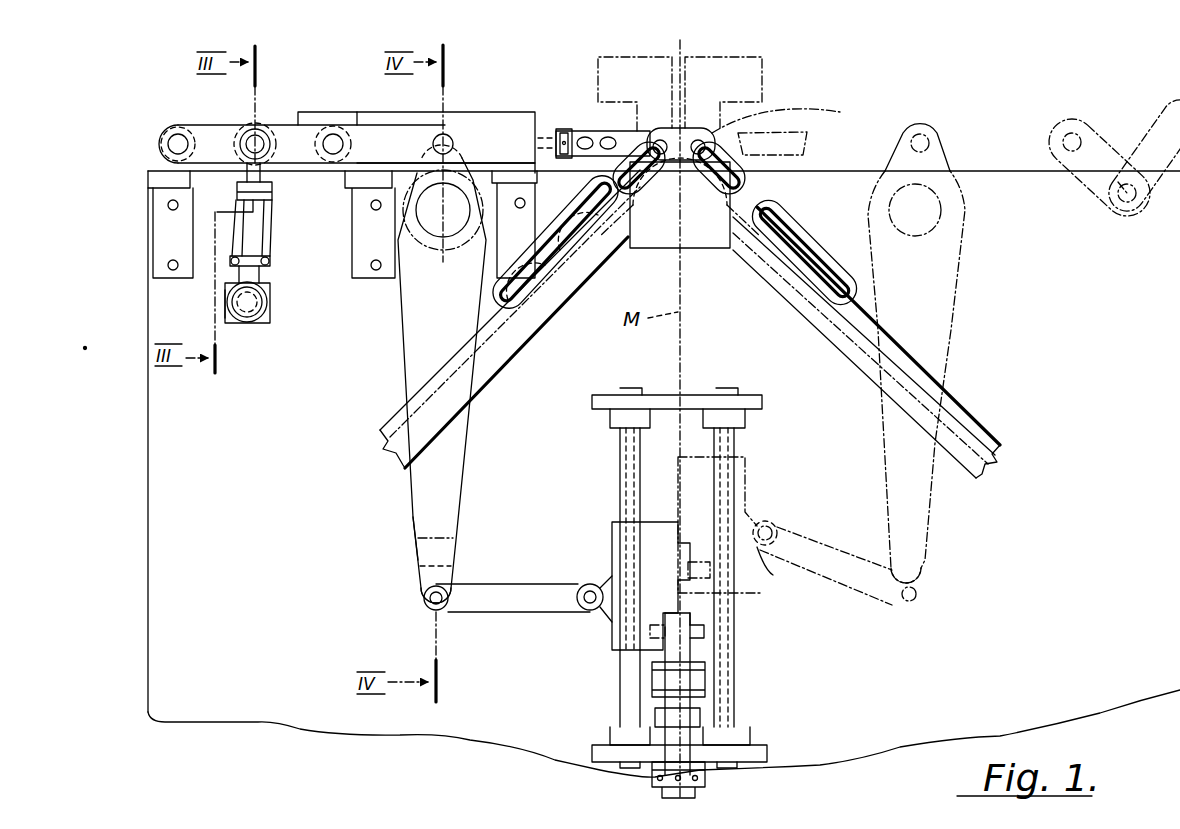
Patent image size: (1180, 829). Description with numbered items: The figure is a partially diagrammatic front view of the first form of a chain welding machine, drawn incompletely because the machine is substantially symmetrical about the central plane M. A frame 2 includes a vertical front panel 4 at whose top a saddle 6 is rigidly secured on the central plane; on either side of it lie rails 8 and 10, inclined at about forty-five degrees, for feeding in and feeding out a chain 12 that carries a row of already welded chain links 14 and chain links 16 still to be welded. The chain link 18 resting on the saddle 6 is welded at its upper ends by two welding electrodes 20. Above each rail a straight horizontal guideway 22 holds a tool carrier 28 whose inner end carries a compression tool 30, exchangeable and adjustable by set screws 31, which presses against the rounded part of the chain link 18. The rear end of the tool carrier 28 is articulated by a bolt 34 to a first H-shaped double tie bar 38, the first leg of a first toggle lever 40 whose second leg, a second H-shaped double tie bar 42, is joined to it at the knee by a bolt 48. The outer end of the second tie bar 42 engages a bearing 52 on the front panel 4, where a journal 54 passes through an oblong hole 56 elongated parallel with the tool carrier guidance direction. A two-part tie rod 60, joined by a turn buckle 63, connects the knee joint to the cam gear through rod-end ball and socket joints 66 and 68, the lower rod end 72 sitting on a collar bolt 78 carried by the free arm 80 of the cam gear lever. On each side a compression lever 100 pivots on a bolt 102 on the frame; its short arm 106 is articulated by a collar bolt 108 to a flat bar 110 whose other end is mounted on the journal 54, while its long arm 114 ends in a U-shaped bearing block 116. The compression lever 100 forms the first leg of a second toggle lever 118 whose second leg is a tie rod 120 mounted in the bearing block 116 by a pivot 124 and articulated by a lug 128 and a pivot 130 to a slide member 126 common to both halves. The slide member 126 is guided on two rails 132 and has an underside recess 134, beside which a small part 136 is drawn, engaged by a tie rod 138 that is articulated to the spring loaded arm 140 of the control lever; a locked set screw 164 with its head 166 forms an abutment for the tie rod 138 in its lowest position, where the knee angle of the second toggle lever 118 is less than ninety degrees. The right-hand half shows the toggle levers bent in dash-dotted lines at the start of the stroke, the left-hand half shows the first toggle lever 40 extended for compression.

The frame 2 is at (205, 730).
The vertical front panel 4 is at (264, 469).
The saddle 6 is at (664, 237).
The rail 8 is at (500, 355).
The rail 10 is at (862, 366).
The chain 12 is at (785, 192).
The welded chain links 14 is at (722, 196).
The chain links still to be welded 16 is at (575, 222).
The chain link 18 is at (782, 128).
The welding electrodes 20 is at (598, 87).
The horizontal guideway 22 is at (400, 112).
The tool carrier 28 is at (550, 130).
The compression tool 30 is at (640, 128).
The set screws 31 is at (606, 136).
The bolt 34 is at (338, 160).
The first H-shaped double tie bar 38 is at (1095, 134).
The first toggle lever 40 is at (1122, 216).
The second H-shaped double tie bar 42 is at (1143, 130).
The bolt 48 is at (240, 168).
The bearing 52 is at (158, 180).
The journal 54 is at (178, 134).
The oblong hole 56 is at (168, 142).
The tie rod 60 is at (272, 236).
The turn buckle 63 is at (262, 252).
The rod-end ball and socket joint 66 is at (250, 128).
The rod-end ball and socket joint 68 is at (276, 316).
The rod end 72 is at (270, 300).
The collar bolt 78 is at (247, 314).
The free arm 80 is at (225, 320).
The compression lever 100 is at (404, 338).
The bolt 102 is at (440, 232).
The short arm 106 is at (465, 168).
The collar bolt 108 is at (450, 138).
The flat bar 110 is at (358, 112).
The long arm 114 is at (416, 519).
The bearing block 116 is at (424, 548).
The second toggle lever 118 is at (422, 614).
The tie rod 120 is at (488, 590).
The pivot 124 is at (422, 602).
The slide member 126 is at (655, 540).
The lug 128 is at (605, 586).
The pivot 130 is at (595, 612).
The rails 132 is at (628, 490).
The recess 134 is at (690, 616).
The key 136 is at (706, 632).
The tie rod 138 is at (690, 658).
The spring loaded arm 140 is at (650, 672).
The locked set screw 164 is at (675, 732).
The head 166 is at (655, 718).